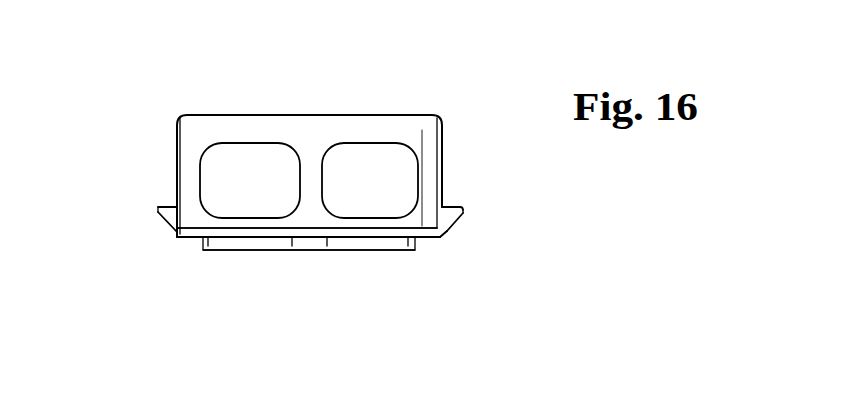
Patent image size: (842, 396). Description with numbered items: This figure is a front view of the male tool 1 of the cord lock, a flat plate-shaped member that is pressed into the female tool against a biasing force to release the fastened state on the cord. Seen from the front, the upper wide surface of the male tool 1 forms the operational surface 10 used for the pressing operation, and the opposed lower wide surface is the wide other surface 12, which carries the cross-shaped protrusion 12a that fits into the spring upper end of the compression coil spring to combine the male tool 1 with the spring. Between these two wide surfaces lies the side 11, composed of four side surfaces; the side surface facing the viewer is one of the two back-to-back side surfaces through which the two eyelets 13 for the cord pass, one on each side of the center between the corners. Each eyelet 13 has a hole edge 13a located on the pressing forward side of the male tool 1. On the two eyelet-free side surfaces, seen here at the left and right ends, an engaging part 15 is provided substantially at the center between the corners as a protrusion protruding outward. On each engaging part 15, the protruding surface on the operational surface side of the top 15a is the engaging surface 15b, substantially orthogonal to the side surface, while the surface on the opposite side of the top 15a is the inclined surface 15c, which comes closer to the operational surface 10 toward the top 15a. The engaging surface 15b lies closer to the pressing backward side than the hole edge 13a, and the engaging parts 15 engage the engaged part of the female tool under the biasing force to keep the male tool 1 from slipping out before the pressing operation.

The male tool 1 is at (302, 188).
The operational surface 10 is at (310, 115).
The side 11 is at (312, 208).
The wide other surface 12 is at (416, 250).
The protrusion 12a is at (268, 250).
The eyelet 13 is at (248, 153).
The hole edge 13a is at (241, 220).
The engaging part 15 is at (302, 198).
The top 15a is at (158, 210).
The engaging surface 15b is at (165, 207).
The inclined surface 15c is at (168, 226).